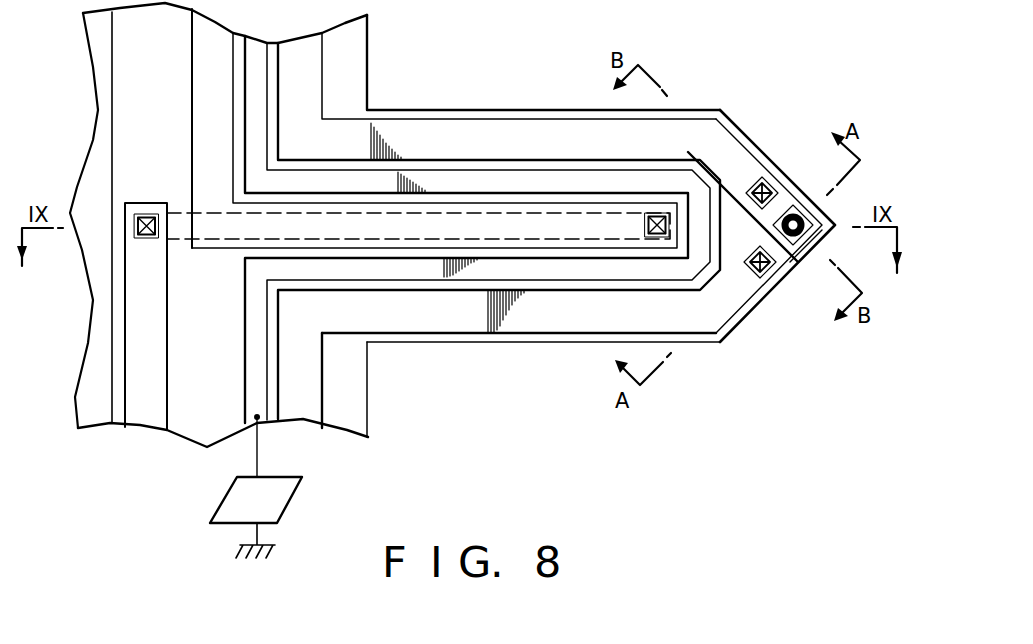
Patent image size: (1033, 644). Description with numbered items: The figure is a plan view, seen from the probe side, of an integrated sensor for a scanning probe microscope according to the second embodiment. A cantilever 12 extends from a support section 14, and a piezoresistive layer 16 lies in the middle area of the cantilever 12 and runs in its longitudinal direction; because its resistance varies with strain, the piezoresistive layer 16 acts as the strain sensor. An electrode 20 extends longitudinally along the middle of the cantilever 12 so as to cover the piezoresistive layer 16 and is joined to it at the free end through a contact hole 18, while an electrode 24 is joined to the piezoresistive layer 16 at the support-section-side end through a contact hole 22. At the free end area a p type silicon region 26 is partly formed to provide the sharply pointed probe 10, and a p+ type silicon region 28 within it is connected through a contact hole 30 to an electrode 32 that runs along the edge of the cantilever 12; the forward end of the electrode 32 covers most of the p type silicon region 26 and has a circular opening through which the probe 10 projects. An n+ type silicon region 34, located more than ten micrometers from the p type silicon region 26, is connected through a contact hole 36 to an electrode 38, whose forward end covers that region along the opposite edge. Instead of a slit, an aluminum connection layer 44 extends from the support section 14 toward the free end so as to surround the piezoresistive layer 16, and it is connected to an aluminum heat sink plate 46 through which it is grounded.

The probe 10 is at (808, 221).
The cantilever 12 is at (540, 347).
The support section 14 is at (365, 406).
The piezoresistive layer 16 is at (232, 241).
The contact hole 18 is at (657, 240).
The electrode 20 is at (189, 83).
The contact hole 22 is at (146, 214).
The electrode 24 is at (157, 412).
The p type silicon region 26 is at (796, 203).
The p+ type silicon region 28 is at (770, 180).
The contact hole 30 is at (750, 183).
The electrode 32 is at (702, 133).
The n+ type silicon region 34 is at (780, 281).
The contact hole 36 is at (756, 273).
The electrode 38 is at (693, 322).
The aluminum connection layer 44 is at (488, 172).
The heat sink plate 46 is at (288, 504).